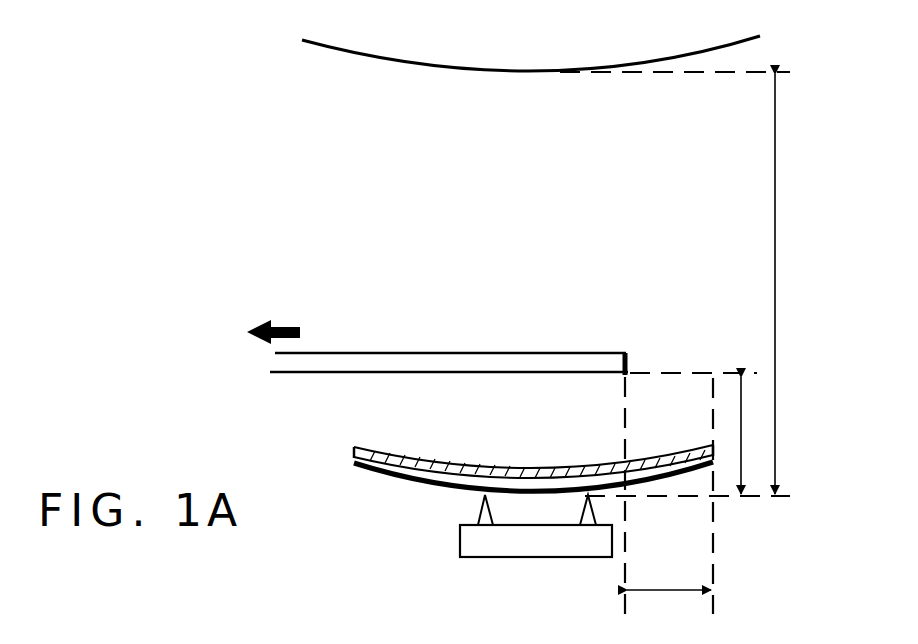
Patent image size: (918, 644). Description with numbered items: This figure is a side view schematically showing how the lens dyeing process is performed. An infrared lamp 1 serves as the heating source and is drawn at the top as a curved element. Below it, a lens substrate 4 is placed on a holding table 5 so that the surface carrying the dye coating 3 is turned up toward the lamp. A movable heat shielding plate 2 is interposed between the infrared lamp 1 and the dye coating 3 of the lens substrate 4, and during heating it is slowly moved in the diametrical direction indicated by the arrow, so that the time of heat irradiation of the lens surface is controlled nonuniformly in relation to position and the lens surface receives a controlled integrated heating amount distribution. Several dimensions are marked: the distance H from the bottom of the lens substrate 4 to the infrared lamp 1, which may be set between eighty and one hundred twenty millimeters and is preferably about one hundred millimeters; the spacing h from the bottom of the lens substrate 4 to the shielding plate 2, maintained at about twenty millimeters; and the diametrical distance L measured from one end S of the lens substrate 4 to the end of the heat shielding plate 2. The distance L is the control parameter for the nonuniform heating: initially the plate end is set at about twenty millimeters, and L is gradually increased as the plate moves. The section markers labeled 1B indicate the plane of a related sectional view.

The infrared lamp 1 is at (531, 46).
The movable heat shielding plate 2 is at (386, 356).
The dye coating 3 is at (394, 448).
The lens substrate 4 is at (419, 479).
The holding table 5 is at (528, 554).
The one end of the lens substrate S is at (713, 370).
The distance (height) from bottom of lens substrate to infrared lamp H is at (788, 284).
The spacing (height) from bottom of lens substrate to shielding plate h is at (754, 435).
The diametrical distance L is at (669, 573).
The section line 1B is at (256, 205).